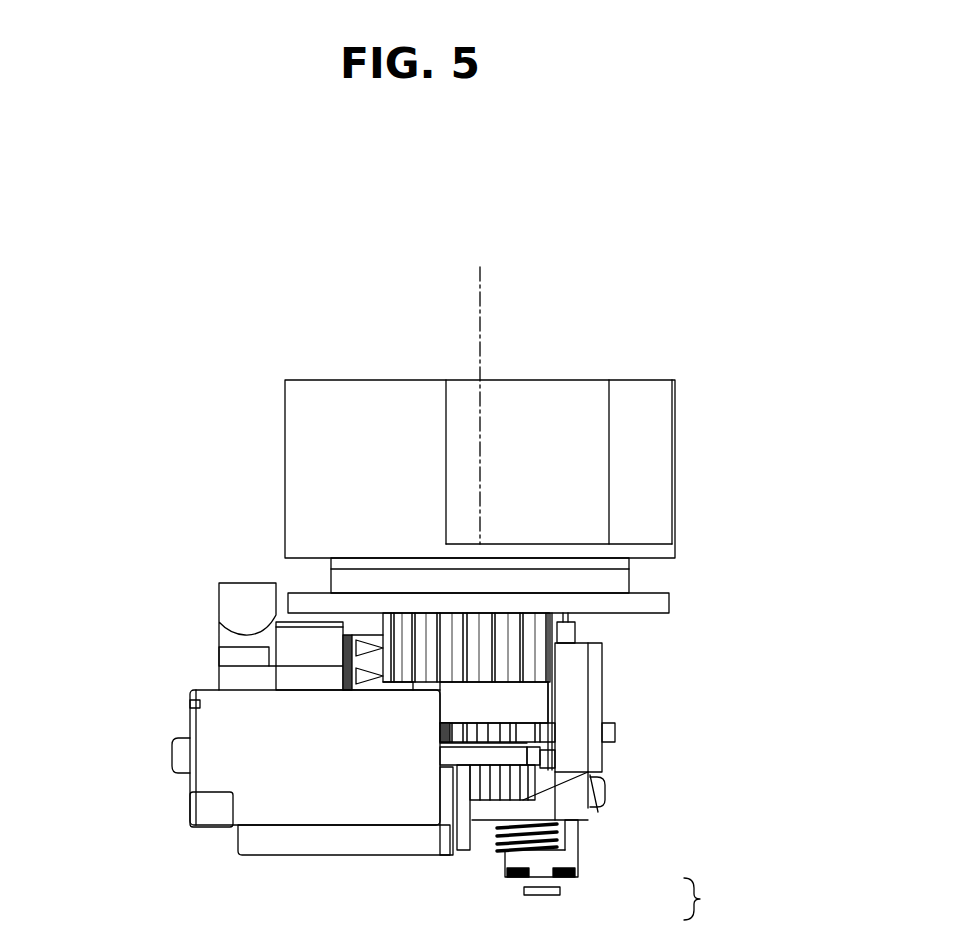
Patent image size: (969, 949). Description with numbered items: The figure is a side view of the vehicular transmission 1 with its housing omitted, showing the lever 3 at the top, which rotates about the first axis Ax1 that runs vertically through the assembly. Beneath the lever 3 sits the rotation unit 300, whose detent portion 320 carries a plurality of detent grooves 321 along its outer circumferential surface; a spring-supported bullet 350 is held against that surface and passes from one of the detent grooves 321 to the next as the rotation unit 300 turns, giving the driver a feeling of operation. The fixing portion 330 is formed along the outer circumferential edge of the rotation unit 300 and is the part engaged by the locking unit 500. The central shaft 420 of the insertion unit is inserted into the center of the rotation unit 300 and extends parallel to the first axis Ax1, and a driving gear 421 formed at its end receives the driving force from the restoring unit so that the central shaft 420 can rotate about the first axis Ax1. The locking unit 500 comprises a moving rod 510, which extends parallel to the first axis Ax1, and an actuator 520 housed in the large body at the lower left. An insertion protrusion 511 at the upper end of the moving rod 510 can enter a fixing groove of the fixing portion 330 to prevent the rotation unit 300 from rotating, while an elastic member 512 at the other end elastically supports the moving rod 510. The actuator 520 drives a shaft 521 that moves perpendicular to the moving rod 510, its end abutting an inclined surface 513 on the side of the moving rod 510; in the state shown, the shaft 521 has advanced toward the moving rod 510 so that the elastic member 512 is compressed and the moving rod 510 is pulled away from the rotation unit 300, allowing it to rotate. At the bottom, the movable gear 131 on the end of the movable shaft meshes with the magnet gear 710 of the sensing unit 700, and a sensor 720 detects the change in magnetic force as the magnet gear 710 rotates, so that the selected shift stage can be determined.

The vehicular transmission 1 is at (725, 294).
The first axis Ax1 is at (481, 391).
The lever 3 is at (655, 430).
The rotation unit 300 is at (640, 578).
The fixing portion 330 is at (665, 605).
The detent portion 320 is at (378, 626).
The detent grooves 321 is at (395, 633).
The bullet 350 is at (360, 663).
The insertion protrusion 511 is at (565, 630).
The central shaft 420 is at (530, 697).
The driving gear 421 is at (517, 730).
The moving rod 510 is at (573, 745).
The inclined surface 513 is at (597, 798).
The locking unit 500 is at (168, 808).
The actuator 520 is at (277, 802).
The shaft 521 is at (460, 755).
The movable gear 131 is at (470, 778).
The elastic member 512 is at (498, 857).
The magnet gear 710 is at (580, 858).
The sensor 720 is at (540, 895).
The sensing unit 700 is at (716, 899).